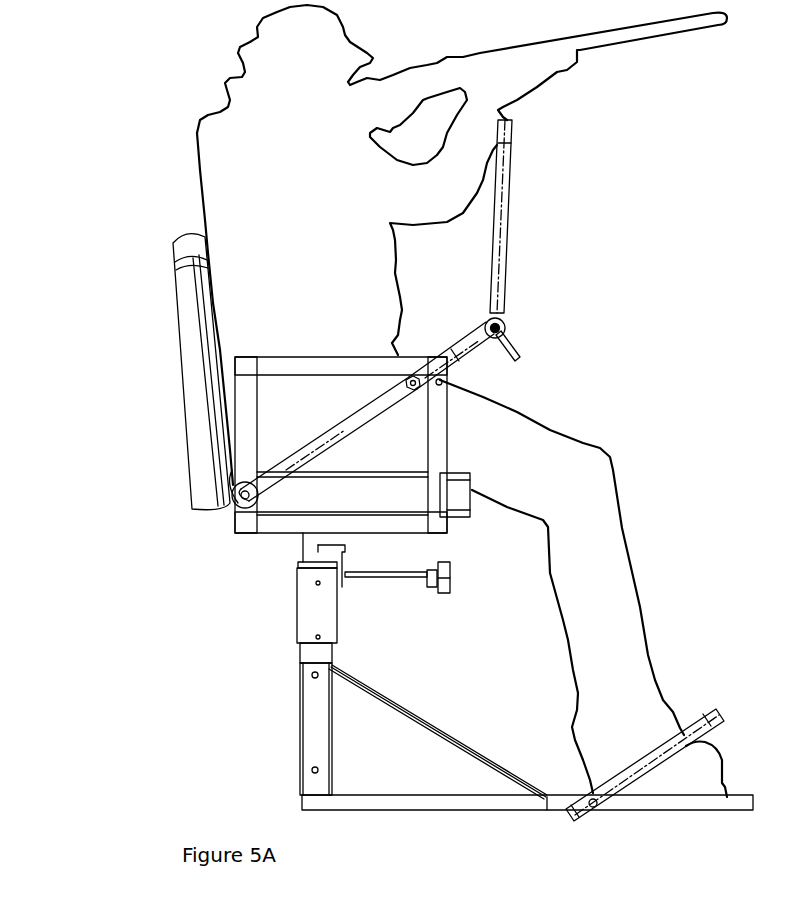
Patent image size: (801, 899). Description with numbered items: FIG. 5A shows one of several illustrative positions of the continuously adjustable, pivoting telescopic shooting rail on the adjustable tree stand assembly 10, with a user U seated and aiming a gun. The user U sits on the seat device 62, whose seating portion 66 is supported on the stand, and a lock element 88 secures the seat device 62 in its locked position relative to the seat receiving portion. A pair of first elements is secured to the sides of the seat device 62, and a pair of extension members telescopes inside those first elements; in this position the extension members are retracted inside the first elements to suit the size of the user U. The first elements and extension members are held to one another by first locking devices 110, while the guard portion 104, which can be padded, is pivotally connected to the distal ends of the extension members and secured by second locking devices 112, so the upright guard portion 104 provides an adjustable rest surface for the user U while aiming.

The user U is at (298, 148).
The adjustable tree stand assembly 10 is at (133, 230).
The seat device 62 is at (182, 384).
The seating portion 66 is at (467, 497).
The lock element 88 is at (448, 583).
The guard portion 104 is at (500, 240).
The first locking devices 110 is at (415, 377).
The second locking devices 112 is at (507, 333).